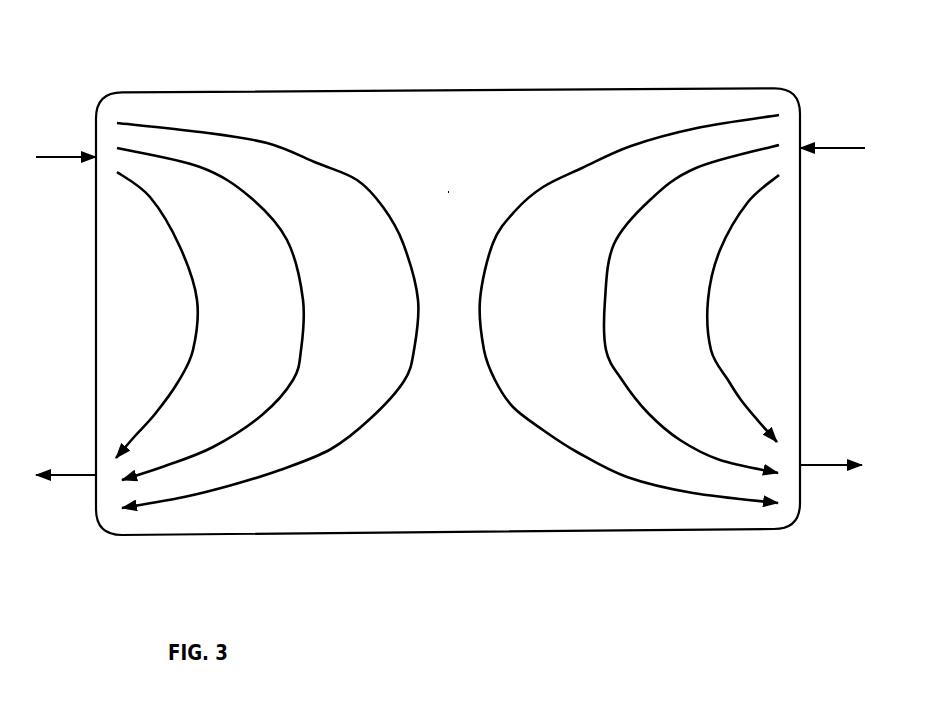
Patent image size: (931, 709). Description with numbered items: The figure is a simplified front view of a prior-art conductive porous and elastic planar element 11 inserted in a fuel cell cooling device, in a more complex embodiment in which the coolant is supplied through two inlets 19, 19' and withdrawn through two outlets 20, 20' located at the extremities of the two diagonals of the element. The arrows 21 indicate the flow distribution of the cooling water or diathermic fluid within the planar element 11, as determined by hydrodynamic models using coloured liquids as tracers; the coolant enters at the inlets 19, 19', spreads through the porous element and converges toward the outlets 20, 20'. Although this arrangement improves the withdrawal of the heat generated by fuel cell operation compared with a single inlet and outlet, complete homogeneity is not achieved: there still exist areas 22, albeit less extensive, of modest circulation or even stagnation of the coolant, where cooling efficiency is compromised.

The conductive porous and elastic planar element 11 is at (241, 92).
The arrows 21 is at (358, 180).
The areas of stagnant flow 22 is at (448, 192).
The inlet 19 is at (847, 153).
The inlet 19' is at (65, 184).
The outlet 20 is at (829, 461).
The outlet 20' is at (65, 440).